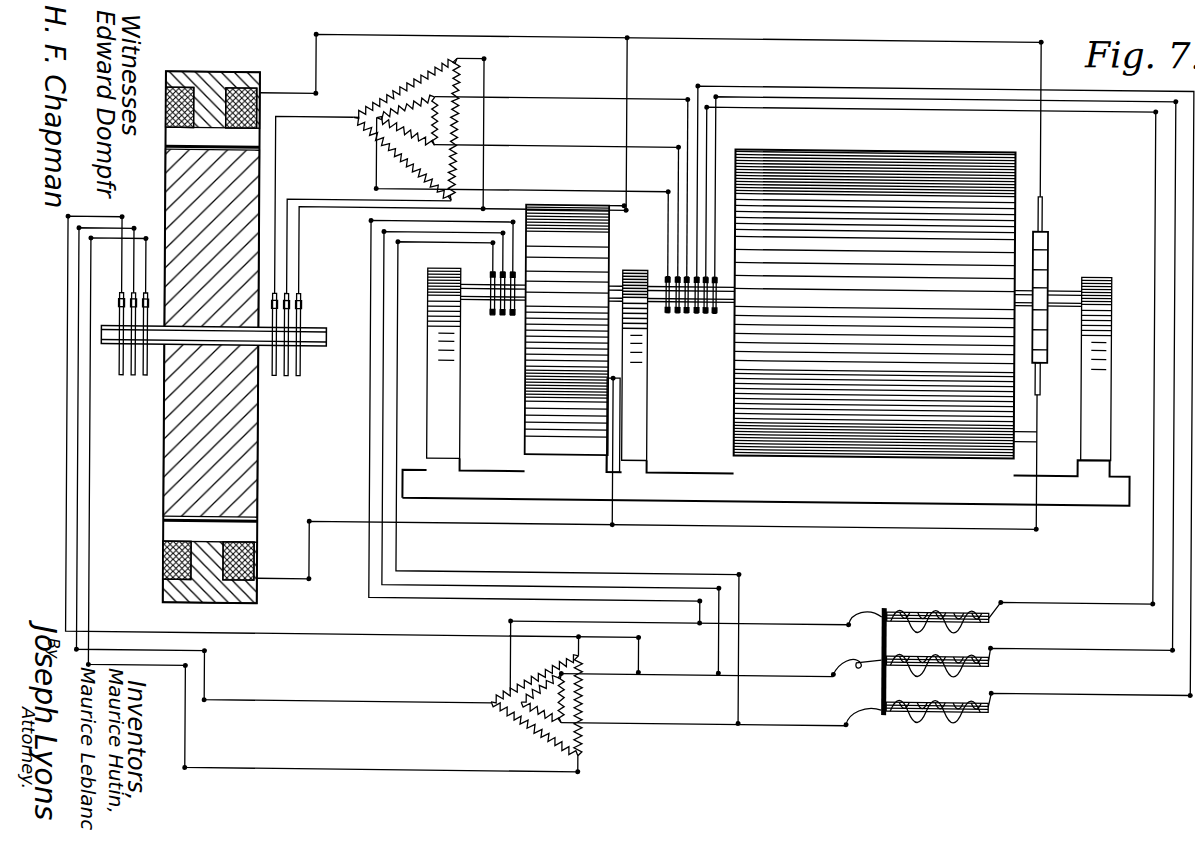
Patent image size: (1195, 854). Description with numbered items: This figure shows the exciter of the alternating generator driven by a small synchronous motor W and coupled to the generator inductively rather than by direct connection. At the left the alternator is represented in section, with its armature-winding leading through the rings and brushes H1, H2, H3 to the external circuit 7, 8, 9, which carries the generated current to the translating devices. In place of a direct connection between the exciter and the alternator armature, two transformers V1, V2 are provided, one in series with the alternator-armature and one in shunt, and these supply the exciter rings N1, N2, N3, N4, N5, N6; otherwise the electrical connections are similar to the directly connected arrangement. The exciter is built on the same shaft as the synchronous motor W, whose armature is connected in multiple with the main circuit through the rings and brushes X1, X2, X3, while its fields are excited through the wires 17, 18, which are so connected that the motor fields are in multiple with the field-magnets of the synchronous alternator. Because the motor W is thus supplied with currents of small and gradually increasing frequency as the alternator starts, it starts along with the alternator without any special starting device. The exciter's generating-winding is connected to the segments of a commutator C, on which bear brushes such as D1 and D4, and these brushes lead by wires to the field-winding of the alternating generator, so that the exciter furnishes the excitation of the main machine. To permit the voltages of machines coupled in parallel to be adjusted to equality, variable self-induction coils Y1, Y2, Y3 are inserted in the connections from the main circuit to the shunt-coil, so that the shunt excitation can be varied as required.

The external circuit wire 7 is at (72, 491).
The external circuit wire 8 is at (82, 513).
The external circuit wire 9 is at (94, 528).
The field-exciting wire 17 is at (623, 509).
The field-exciting wire 18 is at (626, 52).
The ring and brush H1 is at (121, 382).
The ring and brush H2 is at (133, 382).
The ring and brush H3 is at (145, 382).
The transformer V1 is at (418, 118).
The transformer V2 is at (545, 700).
The small synchronous motor W is at (576, 328).
The ring and brush X1 is at (492, 318).
The ring and brush X2 is at (502, 318).
The ring and brush X3 is at (512, 318).
The exciter ring N1 is at (667, 314).
The exciter ring N2 is at (677, 314).
The exciter ring N3 is at (686, 314).
The exciter ring N4 is at (696, 314).
The exciter ring N5 is at (705, 314).
The exciter ring N6 is at (714, 314).
The brush D1 is at (1042, 211).
The commutator C is at (1048, 263).
The brush D4 is at (1041, 378).
The variable self-induction coil Y1 is at (950, 622).
The variable self-induction coil Y2 is at (955, 665).
The variable self-induction coil Y3 is at (960, 710).